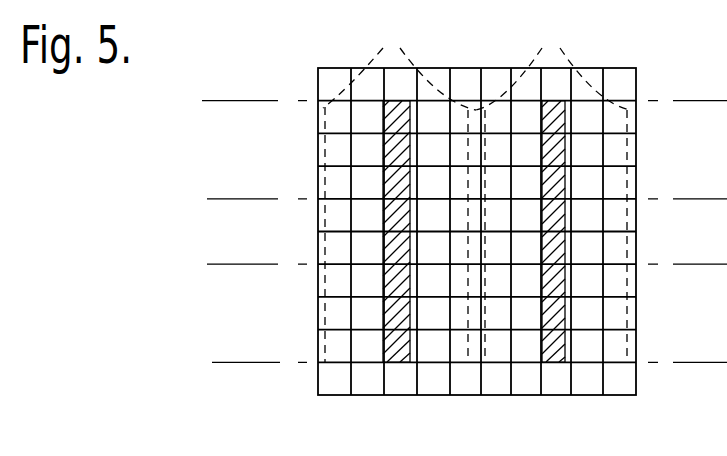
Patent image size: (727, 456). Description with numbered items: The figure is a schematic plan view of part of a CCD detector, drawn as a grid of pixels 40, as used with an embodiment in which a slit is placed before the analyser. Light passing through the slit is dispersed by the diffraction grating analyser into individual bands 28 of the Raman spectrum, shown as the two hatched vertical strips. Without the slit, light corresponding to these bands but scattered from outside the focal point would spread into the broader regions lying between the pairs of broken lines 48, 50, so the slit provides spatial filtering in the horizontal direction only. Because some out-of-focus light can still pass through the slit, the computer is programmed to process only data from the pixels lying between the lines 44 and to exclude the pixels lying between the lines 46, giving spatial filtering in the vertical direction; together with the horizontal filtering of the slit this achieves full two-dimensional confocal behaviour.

The CCD detector array 40 is at (517, 77).
The bands of the Raman spectrum 28 is at (402, 348).
The broken lines 48 is at (399, 68).
The broken lines 50 is at (553, 68).
The lines 46 is at (214, 101).
The lines 44 is at (232, 264).